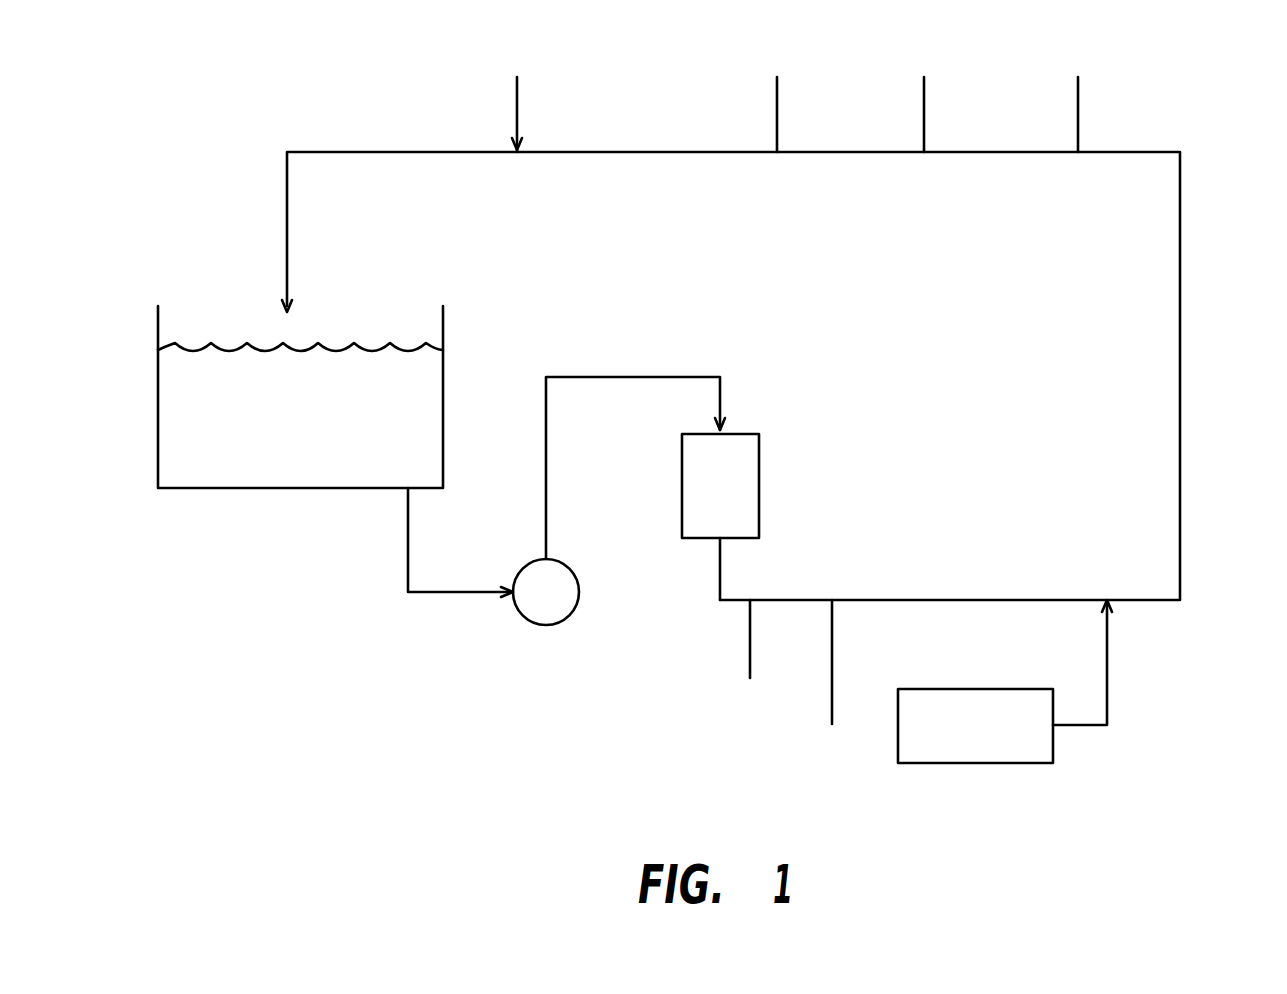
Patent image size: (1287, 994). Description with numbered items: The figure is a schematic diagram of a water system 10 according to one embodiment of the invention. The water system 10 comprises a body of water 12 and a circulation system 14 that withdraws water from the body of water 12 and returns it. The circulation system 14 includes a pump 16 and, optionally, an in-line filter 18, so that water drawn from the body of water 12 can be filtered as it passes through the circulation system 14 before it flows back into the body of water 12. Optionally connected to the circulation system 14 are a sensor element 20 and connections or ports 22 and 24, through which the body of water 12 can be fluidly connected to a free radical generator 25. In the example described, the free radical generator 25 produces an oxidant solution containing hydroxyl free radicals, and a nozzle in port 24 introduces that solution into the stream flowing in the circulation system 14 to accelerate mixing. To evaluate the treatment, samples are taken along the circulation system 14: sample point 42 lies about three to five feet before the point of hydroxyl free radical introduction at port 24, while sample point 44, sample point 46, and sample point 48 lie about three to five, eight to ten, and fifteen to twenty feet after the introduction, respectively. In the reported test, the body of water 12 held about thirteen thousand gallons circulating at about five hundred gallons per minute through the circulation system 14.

The water system 10 is at (306, 90).
The body of water 12 is at (220, 488).
The circulation system 14 is at (1183, 263).
The pump 16 is at (530, 623).
The in-line filter 18 is at (758, 434).
The sensor element 20 is at (750, 678).
The port 22 is at (516, 130).
The port 24 is at (1107, 625).
The free radical generator 25 is at (1010, 763).
The sample point 42 is at (832, 724).
The sample point 44 is at (1078, 115).
The sample point 46 is at (924, 115).
The sample point 48 is at (777, 115).